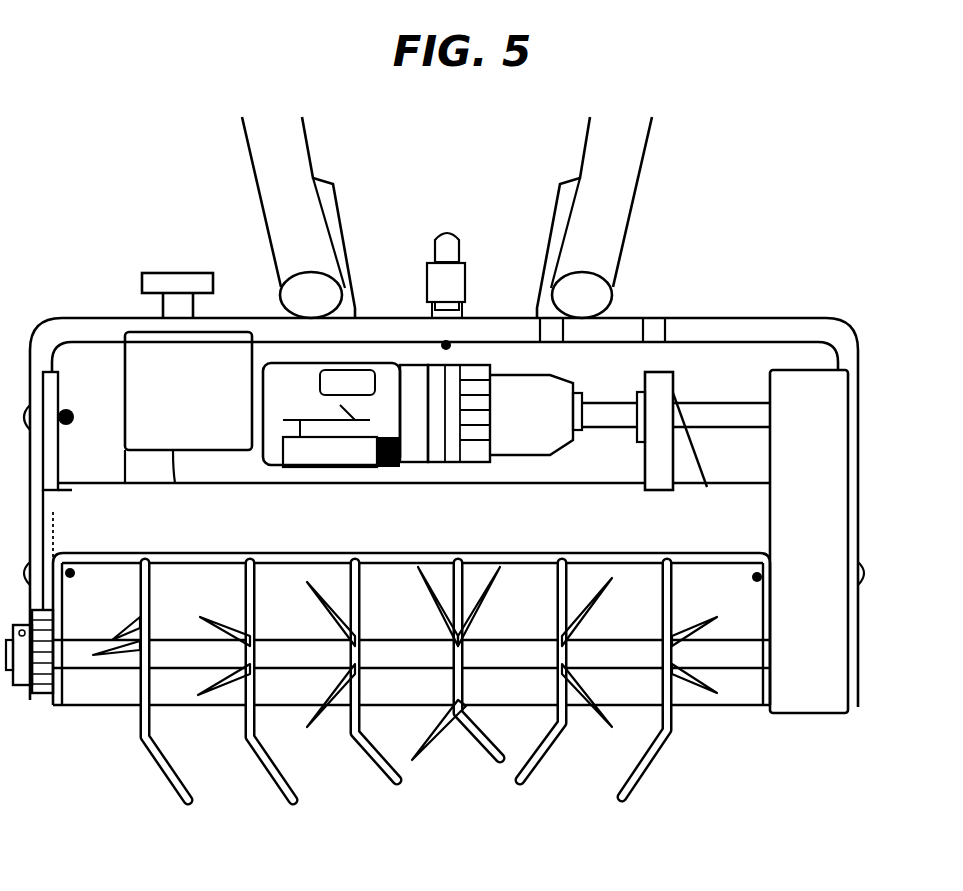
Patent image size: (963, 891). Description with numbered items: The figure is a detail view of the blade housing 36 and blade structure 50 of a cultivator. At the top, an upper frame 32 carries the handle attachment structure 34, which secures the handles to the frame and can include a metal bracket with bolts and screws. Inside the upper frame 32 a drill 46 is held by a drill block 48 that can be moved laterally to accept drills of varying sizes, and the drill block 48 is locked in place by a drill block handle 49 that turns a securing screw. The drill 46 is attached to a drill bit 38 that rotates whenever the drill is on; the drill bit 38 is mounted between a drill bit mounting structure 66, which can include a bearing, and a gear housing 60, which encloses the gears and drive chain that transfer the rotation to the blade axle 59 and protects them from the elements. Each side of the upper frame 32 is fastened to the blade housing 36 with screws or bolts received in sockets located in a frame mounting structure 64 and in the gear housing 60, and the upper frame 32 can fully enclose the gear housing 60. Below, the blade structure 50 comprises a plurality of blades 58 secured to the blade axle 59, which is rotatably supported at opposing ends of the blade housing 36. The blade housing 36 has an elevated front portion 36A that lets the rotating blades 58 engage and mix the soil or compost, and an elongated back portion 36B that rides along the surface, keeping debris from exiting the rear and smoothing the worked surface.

The upper frame 32 is at (815, 320).
The handle attachment structure 34 is at (422, 210).
The blade housing 36 is at (406, 645).
The elevated front portion 36A is at (523, 558).
The elongated back portion 36B is at (95, 703).
The drill bit 38 is at (733, 407).
The drill 46 is at (523, 390).
The drill block 48 is at (188, 407).
The drill block handle 49 is at (180, 283).
The blade structure 50 is at (697, 812).
The blades 58 is at (520, 780).
The blade axle 59 is at (270, 662).
The gear housing 60 is at (830, 472).
The frame mounting structure 64 is at (58, 457).
The drill bit mounting structure 66 is at (665, 387).